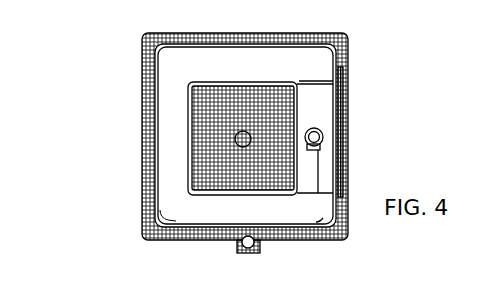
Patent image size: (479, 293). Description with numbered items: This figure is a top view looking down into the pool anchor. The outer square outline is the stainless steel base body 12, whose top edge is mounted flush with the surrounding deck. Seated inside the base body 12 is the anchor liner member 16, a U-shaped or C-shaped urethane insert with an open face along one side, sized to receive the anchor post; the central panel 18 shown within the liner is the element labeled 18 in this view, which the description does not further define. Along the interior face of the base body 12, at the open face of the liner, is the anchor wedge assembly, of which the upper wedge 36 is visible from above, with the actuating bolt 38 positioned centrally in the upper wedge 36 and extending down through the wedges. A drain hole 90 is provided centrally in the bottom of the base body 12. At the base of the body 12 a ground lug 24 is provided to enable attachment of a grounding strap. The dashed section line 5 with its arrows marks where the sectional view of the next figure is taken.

The base body 12 is at (347, 240).
The anchor liner member 16 is at (177, 207).
The panel 18 is at (184, 172).
The ground lug 24 is at (237, 252).
The upper wedge 36 is at (336, 164).
The actuating bolt 38 is at (316, 222).
The drain hole 90 is at (238, 148).
The section line 5- 5 is at (380, 137).